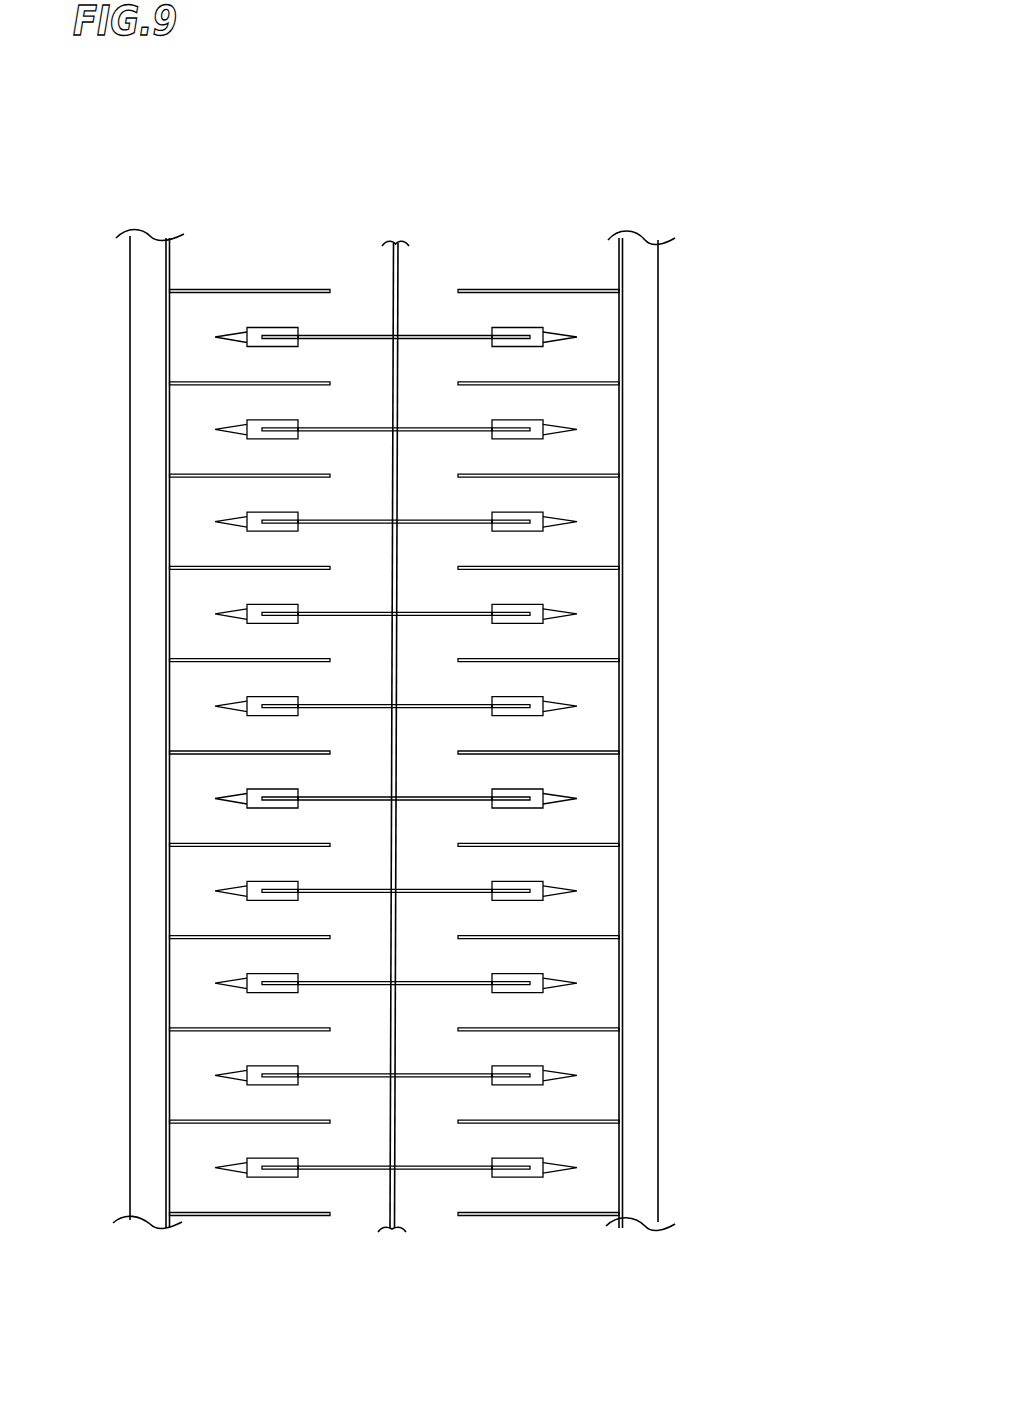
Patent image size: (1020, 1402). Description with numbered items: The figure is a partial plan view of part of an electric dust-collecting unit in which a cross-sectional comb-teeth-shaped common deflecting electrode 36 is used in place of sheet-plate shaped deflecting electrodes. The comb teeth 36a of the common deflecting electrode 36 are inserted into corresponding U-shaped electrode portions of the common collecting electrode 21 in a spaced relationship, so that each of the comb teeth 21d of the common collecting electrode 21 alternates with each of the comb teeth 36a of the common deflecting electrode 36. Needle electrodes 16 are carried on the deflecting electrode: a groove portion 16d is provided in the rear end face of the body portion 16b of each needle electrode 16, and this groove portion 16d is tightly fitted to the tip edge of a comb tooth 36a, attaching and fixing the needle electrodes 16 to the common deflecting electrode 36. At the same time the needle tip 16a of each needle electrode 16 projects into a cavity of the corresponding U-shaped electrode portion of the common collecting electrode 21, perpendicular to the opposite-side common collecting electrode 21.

The needle electrode 16 is at (540, 753).
The needle tip 16a is at (557, 710).
The body portion 16b is at (525, 700).
The groove portion 16d is at (510, 708).
The common collecting electrode 21 is at (163, 713).
The comb teeth of the common collecting electrode 21d is at (582, 1120).
The common deflecting electrode 36 is at (388, 276).
The comb teeth of the common deflecting electrode 36a is at (443, 428).